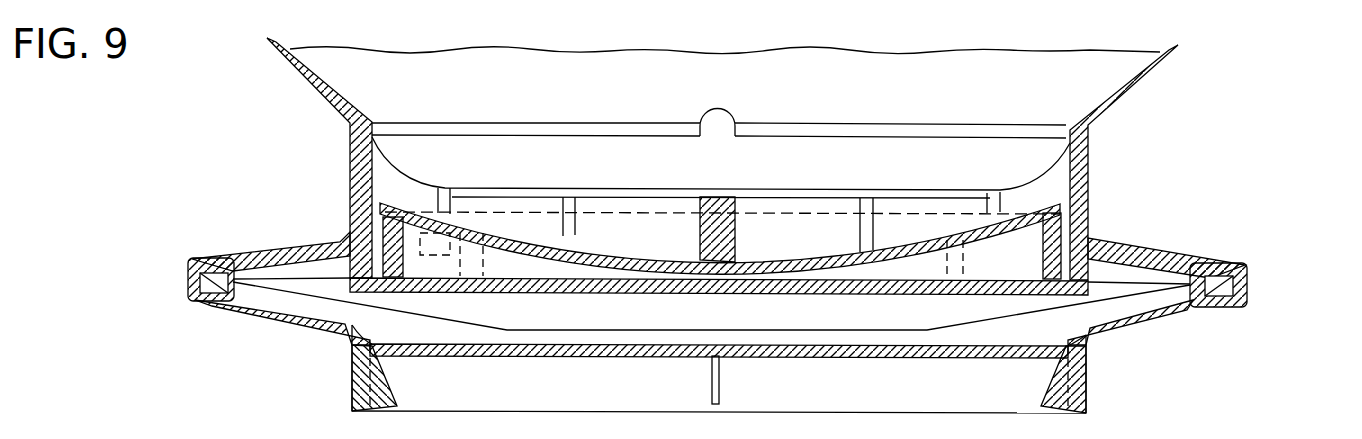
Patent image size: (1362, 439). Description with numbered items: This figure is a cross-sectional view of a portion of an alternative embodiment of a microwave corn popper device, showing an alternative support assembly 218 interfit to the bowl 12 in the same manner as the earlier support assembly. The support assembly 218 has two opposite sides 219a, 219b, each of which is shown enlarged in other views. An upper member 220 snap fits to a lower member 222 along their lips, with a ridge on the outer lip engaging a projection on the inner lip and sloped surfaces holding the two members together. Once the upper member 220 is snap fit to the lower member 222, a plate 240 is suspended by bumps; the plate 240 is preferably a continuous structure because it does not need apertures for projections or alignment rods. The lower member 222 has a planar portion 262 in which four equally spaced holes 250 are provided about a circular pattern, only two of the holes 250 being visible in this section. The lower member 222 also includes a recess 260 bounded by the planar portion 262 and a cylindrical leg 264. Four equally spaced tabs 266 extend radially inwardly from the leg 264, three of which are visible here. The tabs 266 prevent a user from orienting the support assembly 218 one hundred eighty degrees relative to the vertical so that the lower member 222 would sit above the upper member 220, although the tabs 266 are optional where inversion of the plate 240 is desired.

The bowl 12 is at (1143, 88).
The support assembly 218 is at (1118, 238).
The upper member 220 is at (1170, 253).
The side 219a is at (1247, 278).
The side 219b is at (190, 281).
The lower member 222 is at (1117, 323).
The planar portion 262 is at (593, 342).
The plate 240 is at (473, 327).
The holes 250 is at (457, 348).
The recess 260 is at (835, 401).
The cylindrical leg 264 is at (350, 392).
The tabs 266 is at (375, 409).